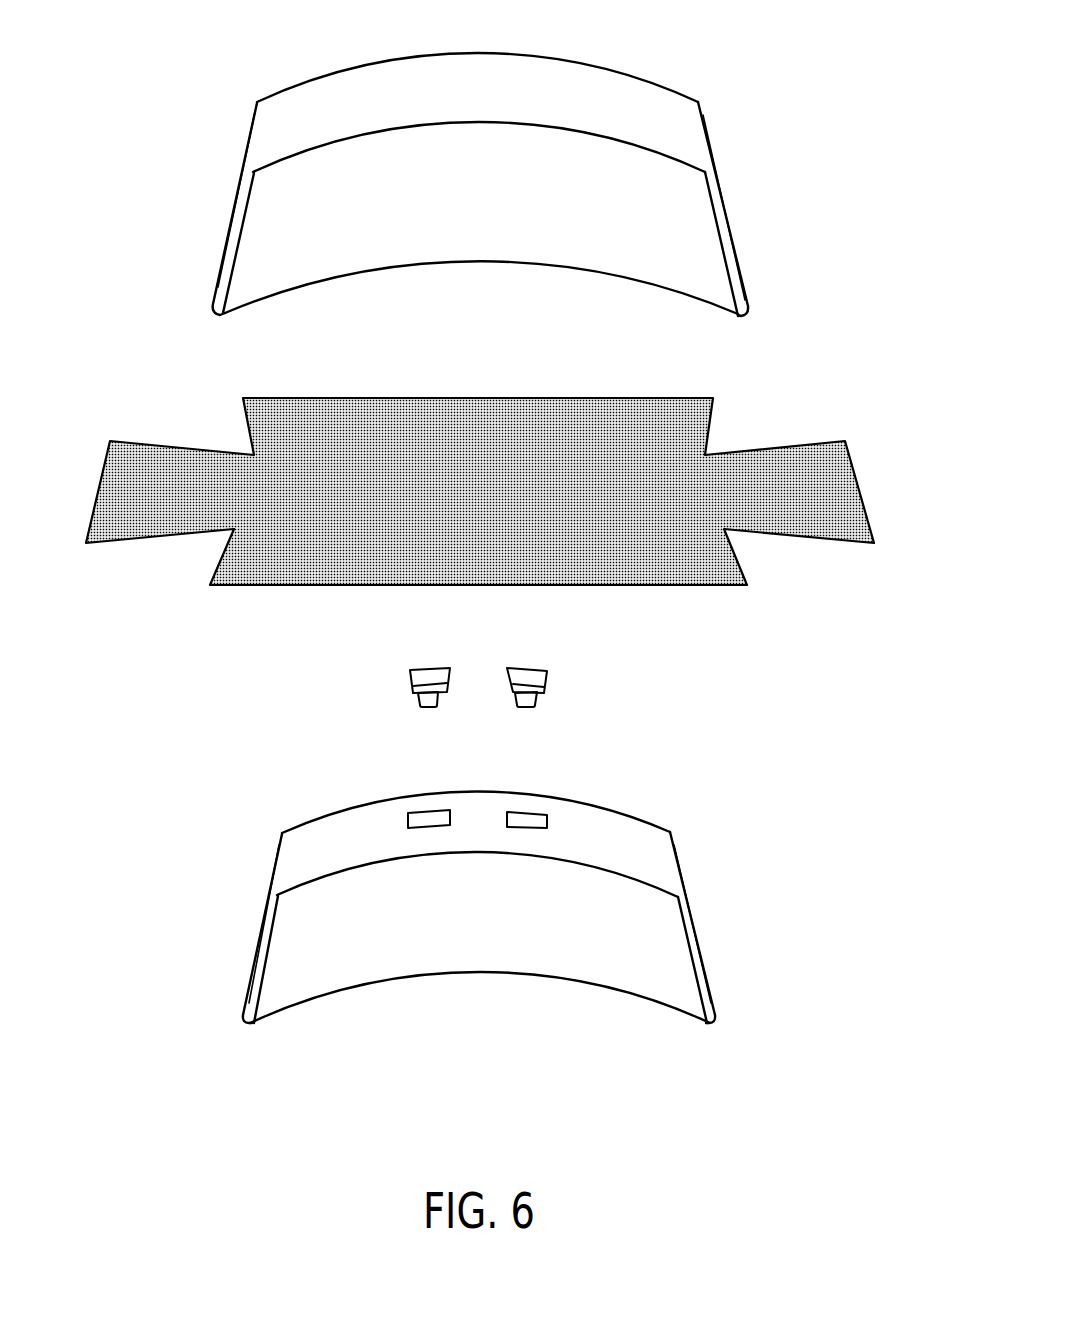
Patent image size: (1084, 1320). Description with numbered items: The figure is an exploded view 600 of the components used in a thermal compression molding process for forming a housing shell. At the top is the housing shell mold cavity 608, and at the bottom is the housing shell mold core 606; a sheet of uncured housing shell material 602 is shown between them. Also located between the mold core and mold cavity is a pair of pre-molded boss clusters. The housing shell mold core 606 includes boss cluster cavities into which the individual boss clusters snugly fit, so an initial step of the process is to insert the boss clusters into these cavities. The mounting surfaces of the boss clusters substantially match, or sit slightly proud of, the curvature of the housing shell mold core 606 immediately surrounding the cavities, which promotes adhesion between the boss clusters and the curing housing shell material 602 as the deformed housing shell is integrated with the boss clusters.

The exploded view 600 is at (184, 54).
The housing shell mold cavity 608 is at (695, 100).
The sheet of uncured housing shell material 602 is at (845, 441).
The housing shell mold core 606 is at (700, 933).